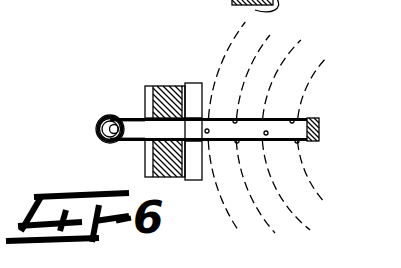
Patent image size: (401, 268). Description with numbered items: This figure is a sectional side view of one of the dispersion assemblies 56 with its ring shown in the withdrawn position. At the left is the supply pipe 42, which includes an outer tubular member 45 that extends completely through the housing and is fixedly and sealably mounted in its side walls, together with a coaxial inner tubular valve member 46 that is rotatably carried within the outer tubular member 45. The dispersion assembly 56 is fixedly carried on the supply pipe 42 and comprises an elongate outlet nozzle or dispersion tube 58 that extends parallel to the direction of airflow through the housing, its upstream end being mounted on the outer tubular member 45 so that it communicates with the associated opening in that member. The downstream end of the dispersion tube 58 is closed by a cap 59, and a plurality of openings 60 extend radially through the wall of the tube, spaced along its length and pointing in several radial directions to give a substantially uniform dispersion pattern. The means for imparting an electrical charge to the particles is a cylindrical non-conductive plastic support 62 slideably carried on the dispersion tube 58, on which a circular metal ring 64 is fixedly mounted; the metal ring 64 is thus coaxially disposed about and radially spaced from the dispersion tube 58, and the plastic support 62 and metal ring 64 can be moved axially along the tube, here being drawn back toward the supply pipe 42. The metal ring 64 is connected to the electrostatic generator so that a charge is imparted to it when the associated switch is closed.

The supply pipe 42 is at (112, 104).
The outer tubular member 45 is at (101, 141).
The inner tubular valve member 46 is at (96, 127).
The dispersion assembly 56 is at (183, 84).
The dispersion tube 58 is at (273, 118).
The cap 59 is at (319, 131).
The openings 60 is at (268, 142).
The plastic support 62 is at (165, 86).
The metal ring 64 is at (193, 84).